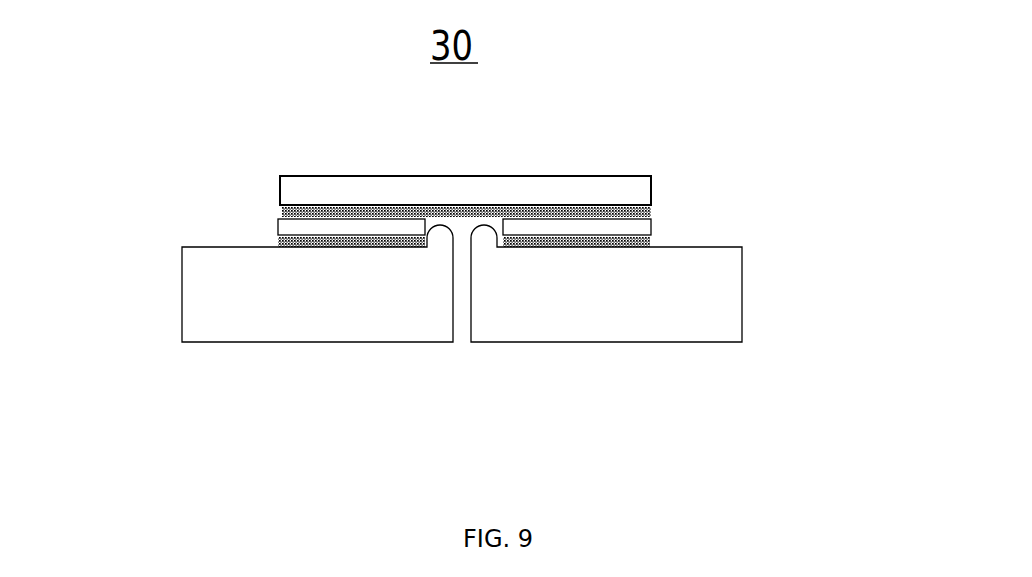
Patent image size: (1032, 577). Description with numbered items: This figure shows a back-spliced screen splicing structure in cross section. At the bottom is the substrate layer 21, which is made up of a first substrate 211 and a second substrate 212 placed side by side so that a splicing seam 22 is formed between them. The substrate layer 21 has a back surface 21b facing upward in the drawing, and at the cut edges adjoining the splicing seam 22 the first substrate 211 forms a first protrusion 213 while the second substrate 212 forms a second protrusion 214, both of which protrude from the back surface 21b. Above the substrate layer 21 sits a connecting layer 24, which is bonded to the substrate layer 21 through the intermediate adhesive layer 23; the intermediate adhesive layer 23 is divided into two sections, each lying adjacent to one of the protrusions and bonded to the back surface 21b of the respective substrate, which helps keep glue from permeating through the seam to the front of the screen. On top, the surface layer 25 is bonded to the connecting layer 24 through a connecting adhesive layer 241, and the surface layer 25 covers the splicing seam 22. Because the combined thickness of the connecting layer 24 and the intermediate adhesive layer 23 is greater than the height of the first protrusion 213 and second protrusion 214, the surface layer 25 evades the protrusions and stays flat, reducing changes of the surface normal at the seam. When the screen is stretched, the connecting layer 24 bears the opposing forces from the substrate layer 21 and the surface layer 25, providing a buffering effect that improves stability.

The substrate layer 21 is at (488, 360).
The first substrate 211 is at (572, 330).
The second substrate 212 is at (203, 322).
The first protrusion 213 is at (486, 245).
The second protrusion 214 is at (445, 240).
The back surface 21b is at (230, 247).
The splicing seam 22 is at (463, 323).
The intermediate adhesive layer 23 is at (647, 240).
The connecting layer 24 is at (452, 194).
The connecting adhesive layer 241 is at (285, 212).
The surface layer 25 is at (288, 188).